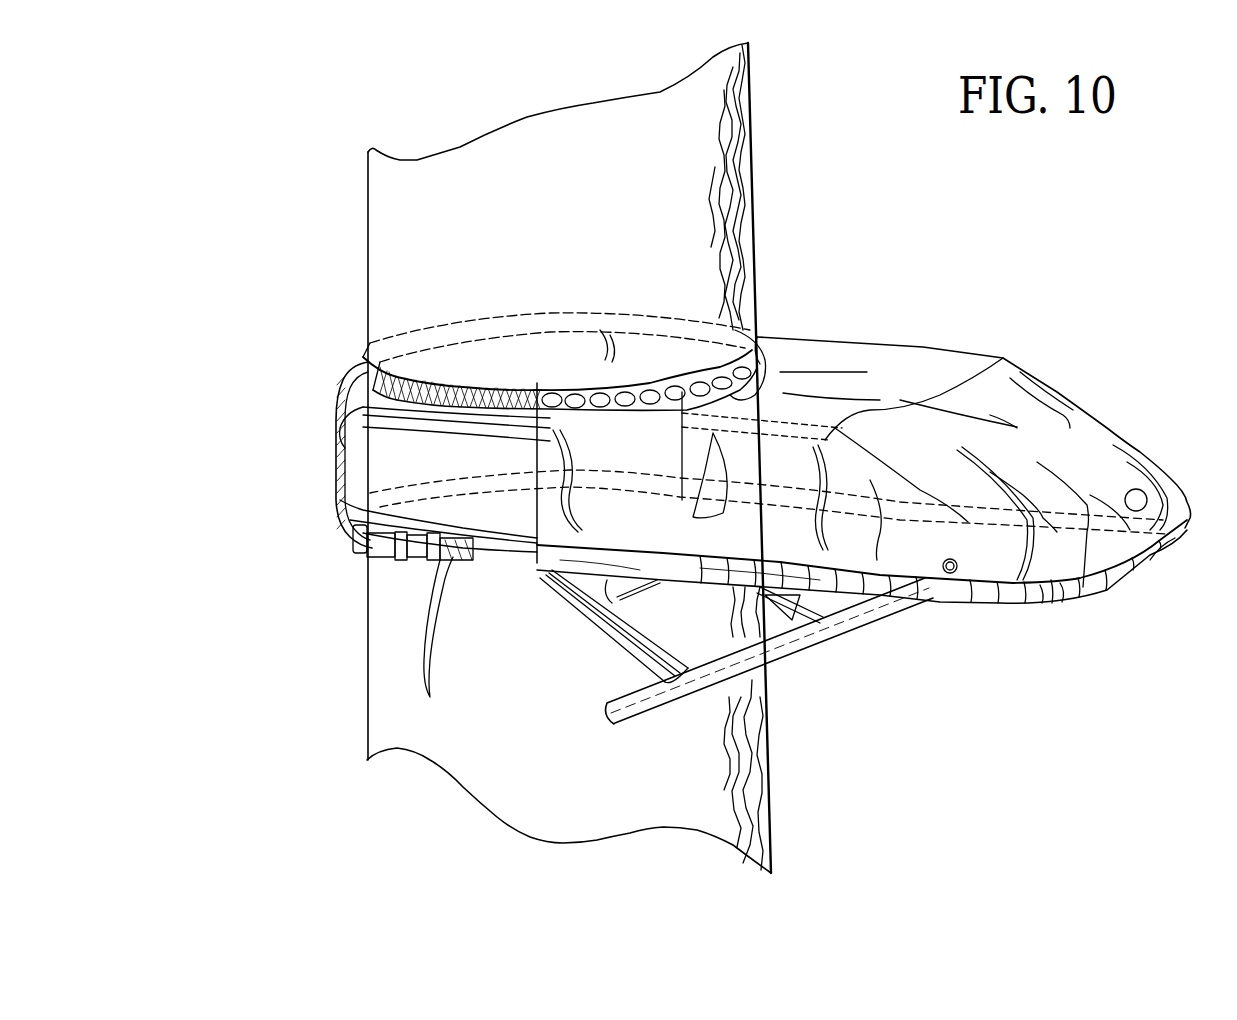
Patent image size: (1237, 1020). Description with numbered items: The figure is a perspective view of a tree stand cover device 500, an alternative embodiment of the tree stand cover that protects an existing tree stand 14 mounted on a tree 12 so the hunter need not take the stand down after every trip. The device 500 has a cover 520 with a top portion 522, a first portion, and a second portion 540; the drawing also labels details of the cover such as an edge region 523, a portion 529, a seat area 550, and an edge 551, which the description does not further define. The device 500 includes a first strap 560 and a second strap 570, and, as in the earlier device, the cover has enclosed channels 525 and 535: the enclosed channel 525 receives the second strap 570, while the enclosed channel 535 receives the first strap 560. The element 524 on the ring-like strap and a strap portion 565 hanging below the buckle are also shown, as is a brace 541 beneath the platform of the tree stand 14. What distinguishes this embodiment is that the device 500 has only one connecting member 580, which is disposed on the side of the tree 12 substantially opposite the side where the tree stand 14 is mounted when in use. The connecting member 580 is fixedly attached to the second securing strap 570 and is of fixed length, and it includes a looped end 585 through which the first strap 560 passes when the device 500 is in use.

The tree 12 is at (758, 150).
The tree stand 14 is at (383, 434).
The tree stand cover device 500 is at (1118, 260).
The cover 520 is at (928, 346).
The top portion 522 is at (1010, 352).
The edge portion 523 is at (1044, 610).
The cable 524 is at (757, 326).
The enclosed channel 525 is at (758, 346).
The seam 529 is at (967, 606).
The enclosed channel 535 is at (867, 626).
The second portion 540 is at (913, 606).
The brace 541 is at (830, 634).
The seat portion 550 is at (1103, 462).
The edge 551 is at (1120, 574).
The first strap 560 is at (364, 560).
The strap 565 is at (407, 566).
The second strap 570 is at (422, 364).
The connecting member 580 is at (331, 418).
The looped end 585 is at (353, 532).